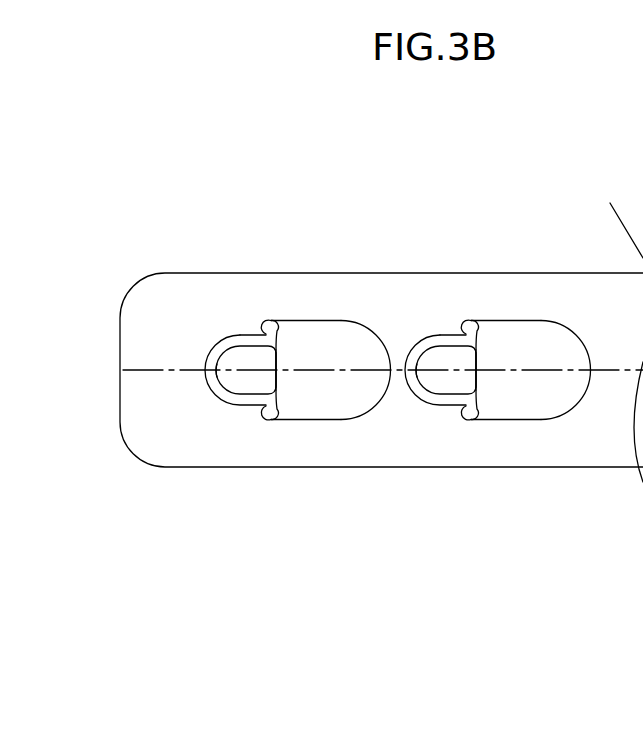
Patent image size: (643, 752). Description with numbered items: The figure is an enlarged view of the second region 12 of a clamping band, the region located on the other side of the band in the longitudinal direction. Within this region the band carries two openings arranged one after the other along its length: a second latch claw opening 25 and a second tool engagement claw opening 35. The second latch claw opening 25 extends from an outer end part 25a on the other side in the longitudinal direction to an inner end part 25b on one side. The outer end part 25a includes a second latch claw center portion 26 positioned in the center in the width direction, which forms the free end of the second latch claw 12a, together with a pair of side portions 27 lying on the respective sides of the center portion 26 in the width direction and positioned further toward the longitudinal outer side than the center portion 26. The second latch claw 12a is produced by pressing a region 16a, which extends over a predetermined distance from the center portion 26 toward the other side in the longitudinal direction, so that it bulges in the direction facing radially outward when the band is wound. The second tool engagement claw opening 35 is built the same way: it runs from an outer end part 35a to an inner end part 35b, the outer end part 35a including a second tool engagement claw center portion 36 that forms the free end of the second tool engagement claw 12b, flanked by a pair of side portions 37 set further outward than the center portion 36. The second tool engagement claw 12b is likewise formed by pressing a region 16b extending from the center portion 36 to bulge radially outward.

The second region 12 is at (288, 237).
The second latch claw 12a is at (228, 333).
The second tool engagement claw 12b is at (442, 333).
The region 16a is at (244, 384).
The region 16b is at (442, 385).
The second latch claw opening 25 is at (322, 343).
The outer end part 25a is at (283, 383).
The inner end part 25b is at (380, 393).
The second latch claw center portion 26 is at (278, 347).
The side portions 27 is at (268, 319).
The second tool engagement claw opening 35 is at (525, 319).
The outer end part 35a is at (487, 385).
The inner end part 35b is at (572, 393).
The second tool engagement claw center portion 36 is at (476, 350).
The side portions 37 is at (470, 320).